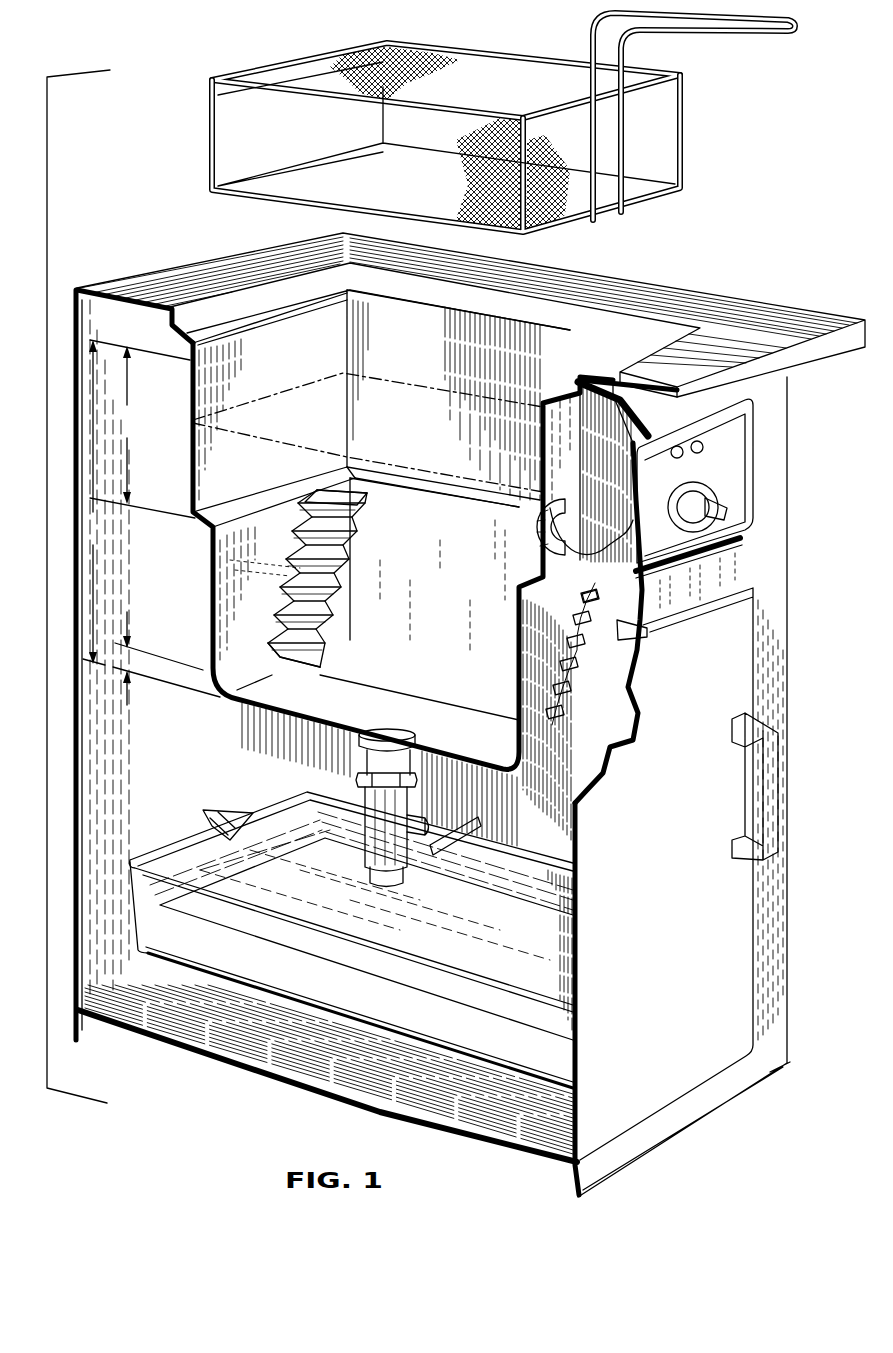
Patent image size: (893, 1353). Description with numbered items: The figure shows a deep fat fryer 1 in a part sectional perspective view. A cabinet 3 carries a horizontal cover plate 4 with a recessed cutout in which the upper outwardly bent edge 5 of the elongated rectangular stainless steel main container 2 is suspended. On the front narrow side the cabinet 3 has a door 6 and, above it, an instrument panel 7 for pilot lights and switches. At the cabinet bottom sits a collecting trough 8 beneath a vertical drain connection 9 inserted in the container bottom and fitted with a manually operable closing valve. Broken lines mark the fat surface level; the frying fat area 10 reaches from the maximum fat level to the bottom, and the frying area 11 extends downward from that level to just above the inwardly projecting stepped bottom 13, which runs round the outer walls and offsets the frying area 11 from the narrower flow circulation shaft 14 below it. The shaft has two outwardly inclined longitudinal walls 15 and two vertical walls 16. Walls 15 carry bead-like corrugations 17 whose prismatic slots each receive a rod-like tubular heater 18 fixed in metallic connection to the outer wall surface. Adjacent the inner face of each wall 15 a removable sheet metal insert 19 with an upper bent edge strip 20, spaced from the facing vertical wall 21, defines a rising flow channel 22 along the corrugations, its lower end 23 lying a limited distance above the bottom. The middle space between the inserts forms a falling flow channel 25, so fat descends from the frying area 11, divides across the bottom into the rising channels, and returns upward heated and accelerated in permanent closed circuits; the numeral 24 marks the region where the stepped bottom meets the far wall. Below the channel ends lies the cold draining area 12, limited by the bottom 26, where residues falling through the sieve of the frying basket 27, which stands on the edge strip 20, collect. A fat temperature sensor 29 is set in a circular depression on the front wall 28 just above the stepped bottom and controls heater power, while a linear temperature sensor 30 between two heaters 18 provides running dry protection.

The deep fat fryer 1 is at (130, 228).
The main container 2 is at (168, 562).
The cabinet 3 is at (750, 1142).
The cover plate 4 is at (205, 272).
The edge 5 is at (222, 328).
The door 6 is at (681, 874).
The instrument panel 7 is at (694, 504).
The collecting trough 8 is at (178, 845).
The drain connection 9 is at (378, 843).
The frying fat area 10 is at (150, 518).
The frying area 11 is at (142, 432).
The draining area 12 is at (159, 658).
The stepped bottom 13 is at (240, 507).
The flow circulation shaft 14 is at (227, 637).
The longitudinal walls 15 is at (340, 508).
The walls 16 is at (222, 566).
The corrugations 17 is at (335, 578).
The tubular heater 18 is at (583, 551).
The insert 19 is at (434, 564).
The edge strip 20 is at (427, 485).
The vertical wall 21 is at (381, 395).
The rising flow channel 22 is at (340, 618).
The lower end 23 is at (398, 692).
The ledge corner 24 is at (372, 470).
The falling flow channel 25 is at (500, 680).
The bottom 26 is at (272, 706).
The frying basket 27 is at (494, 60).
The wall 28 is at (544, 462).
The fat temperature sensor 29 is at (552, 520).
The linear temperature sensor 30 is at (582, 598).